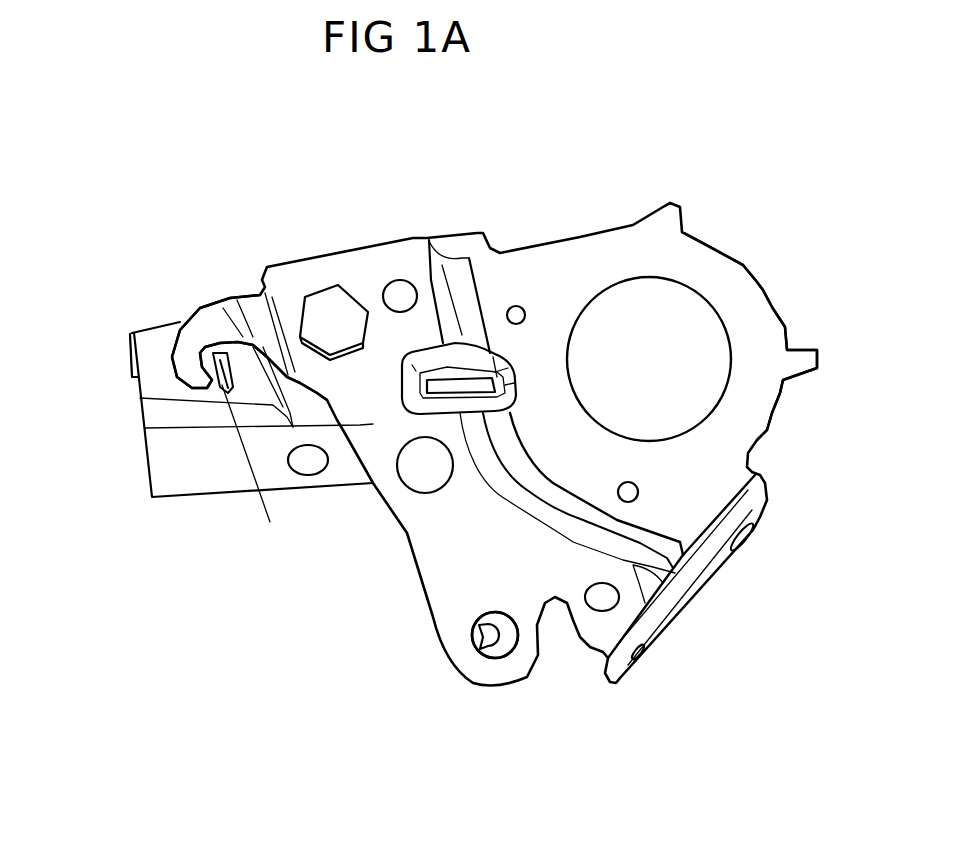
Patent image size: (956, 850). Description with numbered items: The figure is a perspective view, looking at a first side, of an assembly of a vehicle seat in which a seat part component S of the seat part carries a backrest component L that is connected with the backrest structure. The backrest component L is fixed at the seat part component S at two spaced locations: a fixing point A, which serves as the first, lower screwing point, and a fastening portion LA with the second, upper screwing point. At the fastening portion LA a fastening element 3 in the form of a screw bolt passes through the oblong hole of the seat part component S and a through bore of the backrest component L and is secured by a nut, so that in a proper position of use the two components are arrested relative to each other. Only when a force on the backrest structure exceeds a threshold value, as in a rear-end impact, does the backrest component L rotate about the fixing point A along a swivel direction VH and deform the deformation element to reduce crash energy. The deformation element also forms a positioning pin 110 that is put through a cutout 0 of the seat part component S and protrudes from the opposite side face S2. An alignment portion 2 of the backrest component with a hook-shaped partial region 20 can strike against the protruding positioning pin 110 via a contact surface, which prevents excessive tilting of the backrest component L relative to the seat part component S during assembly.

The alignment portion 2 is at (259, 309).
The fastening element 3 is at (343, 306).
The fastening portion LA is at (422, 318).
The backrest component L is at (715, 282).
The side face S2 is at (147, 360).
The hook-shaped partial region 20 is at (187, 373).
The positioning pin 110 is at (220, 383).
The cutout 0 is at (253, 470).
The seat part component S is at (222, 495).
The swivel direction VH is at (490, 655).
The fixing point A is at (507, 657).